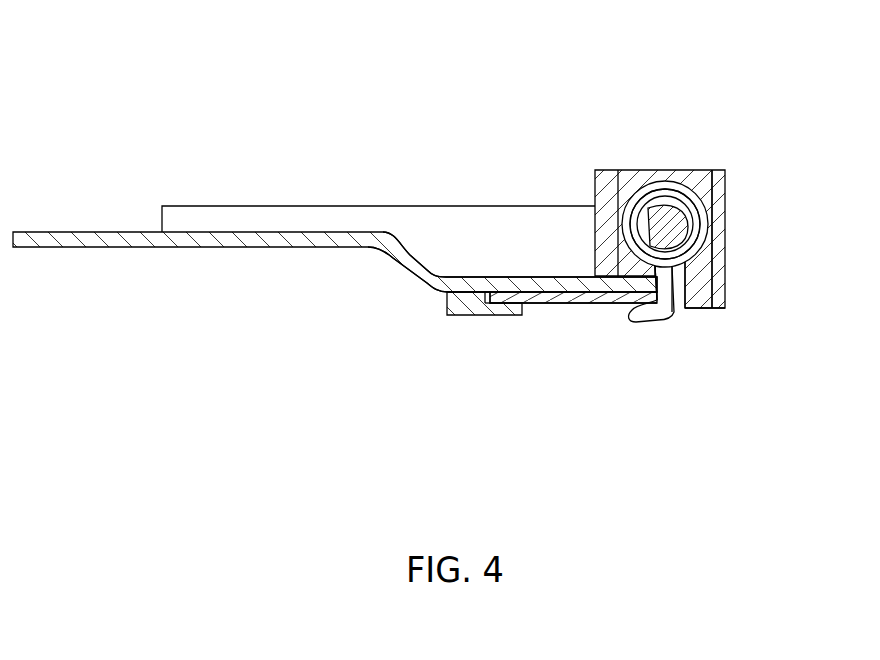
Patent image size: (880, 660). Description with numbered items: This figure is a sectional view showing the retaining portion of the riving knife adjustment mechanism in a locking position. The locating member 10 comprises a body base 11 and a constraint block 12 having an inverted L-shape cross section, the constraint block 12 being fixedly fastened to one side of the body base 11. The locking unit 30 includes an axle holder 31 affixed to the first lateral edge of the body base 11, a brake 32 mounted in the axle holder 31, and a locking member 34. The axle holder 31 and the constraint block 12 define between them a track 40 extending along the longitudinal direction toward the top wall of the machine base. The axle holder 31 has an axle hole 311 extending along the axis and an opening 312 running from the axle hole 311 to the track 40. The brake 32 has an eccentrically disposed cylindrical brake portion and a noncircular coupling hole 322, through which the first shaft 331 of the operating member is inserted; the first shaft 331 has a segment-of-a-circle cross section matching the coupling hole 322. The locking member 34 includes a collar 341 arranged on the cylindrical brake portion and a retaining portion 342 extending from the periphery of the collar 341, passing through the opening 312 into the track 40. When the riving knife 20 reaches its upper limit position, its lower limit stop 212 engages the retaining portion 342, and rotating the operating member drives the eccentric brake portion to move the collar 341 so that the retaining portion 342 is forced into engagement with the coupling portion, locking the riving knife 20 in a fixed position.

The locating member 10 is at (266, 238).
The body base 11 is at (388, 240).
The constraint block 12 is at (472, 310).
The riving knife 20 is at (548, 306).
The lower limit stop 212 is at (662, 290).
The locking unit 30 is at (713, 243).
The axle holder 31 is at (722, 238).
The axle hole 311 is at (708, 187).
The opening 312 is at (680, 303).
The brake 32 is at (668, 214).
The noncircular coupling hole 322 is at (717, 276).
The first shaft 331 is at (675, 198).
The locking member 34 is at (705, 221).
The collar 341 is at (692, 190).
The retaining portion 342 is at (647, 316).
The track 40 is at (505, 290).